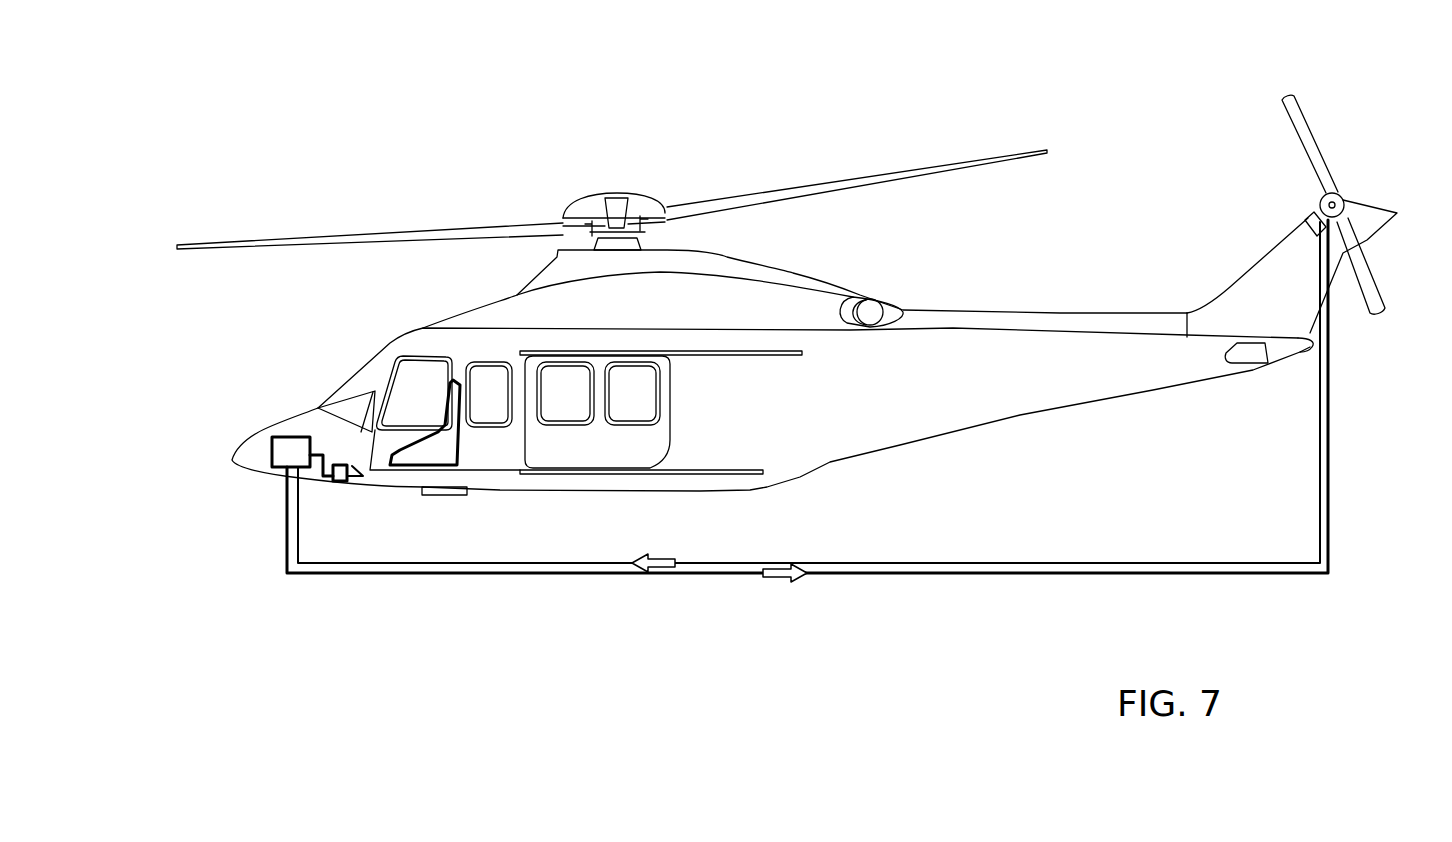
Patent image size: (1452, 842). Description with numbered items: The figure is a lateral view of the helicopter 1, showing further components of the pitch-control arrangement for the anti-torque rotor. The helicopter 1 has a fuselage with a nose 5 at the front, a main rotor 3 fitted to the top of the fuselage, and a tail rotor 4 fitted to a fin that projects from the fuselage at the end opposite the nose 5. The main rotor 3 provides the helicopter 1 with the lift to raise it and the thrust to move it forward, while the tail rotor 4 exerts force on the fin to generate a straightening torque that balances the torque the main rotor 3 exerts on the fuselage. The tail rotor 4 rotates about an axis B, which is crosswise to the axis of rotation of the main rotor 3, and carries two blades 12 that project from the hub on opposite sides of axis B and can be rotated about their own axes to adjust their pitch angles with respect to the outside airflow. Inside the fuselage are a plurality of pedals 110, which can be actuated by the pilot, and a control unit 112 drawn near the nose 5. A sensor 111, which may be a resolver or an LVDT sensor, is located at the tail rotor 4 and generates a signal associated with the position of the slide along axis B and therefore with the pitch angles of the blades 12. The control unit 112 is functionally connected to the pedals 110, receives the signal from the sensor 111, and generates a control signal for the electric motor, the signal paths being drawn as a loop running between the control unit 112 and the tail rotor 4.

The helicopter 1 is at (1030, 253).
The main rotor 3 is at (488, 196).
The tail rotor 4 is at (1362, 151).
The nose 5 is at (248, 440).
The blades 12 is at (1303, 138).
The sensor 111 is at (1306, 216).
The control unit 112 is at (278, 457).
The pedals 110 is at (338, 483).
The axis B is at (1343, 197).